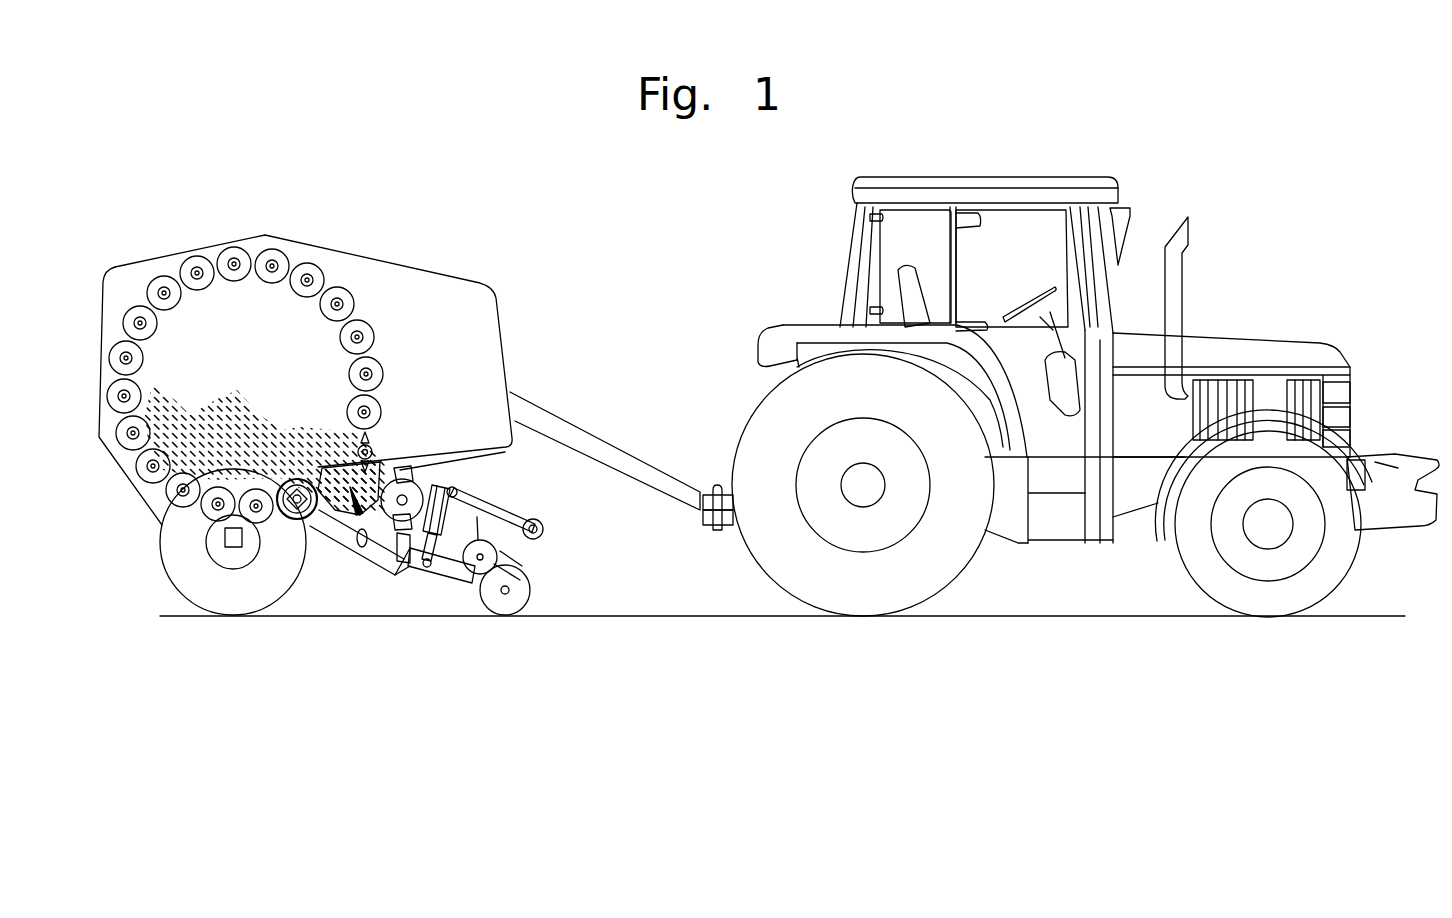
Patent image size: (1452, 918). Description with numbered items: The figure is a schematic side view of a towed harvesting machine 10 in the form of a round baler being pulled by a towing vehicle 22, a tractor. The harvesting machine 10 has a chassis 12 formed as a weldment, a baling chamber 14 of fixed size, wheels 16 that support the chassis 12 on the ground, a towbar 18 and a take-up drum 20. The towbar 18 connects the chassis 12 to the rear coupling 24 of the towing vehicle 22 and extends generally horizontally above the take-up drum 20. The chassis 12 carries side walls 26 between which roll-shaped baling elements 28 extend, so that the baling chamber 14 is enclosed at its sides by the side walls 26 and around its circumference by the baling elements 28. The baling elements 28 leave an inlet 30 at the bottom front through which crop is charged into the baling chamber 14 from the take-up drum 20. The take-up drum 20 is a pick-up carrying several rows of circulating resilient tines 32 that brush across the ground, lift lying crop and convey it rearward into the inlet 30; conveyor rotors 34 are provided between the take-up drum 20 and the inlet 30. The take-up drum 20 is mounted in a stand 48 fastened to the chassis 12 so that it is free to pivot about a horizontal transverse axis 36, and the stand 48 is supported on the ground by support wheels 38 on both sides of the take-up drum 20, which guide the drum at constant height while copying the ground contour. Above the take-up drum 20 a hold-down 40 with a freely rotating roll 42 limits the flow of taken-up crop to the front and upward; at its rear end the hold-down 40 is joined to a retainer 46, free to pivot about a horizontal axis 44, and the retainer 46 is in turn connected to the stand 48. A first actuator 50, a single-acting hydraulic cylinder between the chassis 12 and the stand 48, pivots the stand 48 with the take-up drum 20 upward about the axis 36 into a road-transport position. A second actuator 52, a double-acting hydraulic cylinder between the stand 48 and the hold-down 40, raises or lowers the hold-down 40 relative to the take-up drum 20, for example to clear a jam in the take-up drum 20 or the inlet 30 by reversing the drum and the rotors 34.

The harvesting machine 10 is at (193, 565).
The chassis 12 is at (312, 535).
The baling chamber 14 is at (243, 369).
The wheels 16 is at (259, 612).
The towbar 18 is at (637, 483).
The take-up drum 20 is at (478, 588).
The towing vehicle 22 is at (1103, 638).
The rear coupling 24 is at (717, 532).
The side walls 26 is at (458, 310).
The baling elements 28 is at (267, 237).
The inlet 30 is at (315, 522).
The tines 32 is at (513, 555).
The conveyor rotors 34 is at (380, 448).
The axis 36 is at (427, 566).
The support wheels 38 is at (527, 613).
The hold-down 40 is at (536, 521).
The roll 42 is at (538, 522).
The horizontal axis 44 is at (480, 460).
The retainer 46 is at (422, 486).
The stand 48 is at (474, 574).
The first actuator 50 is at (368, 548).
The second actuator 52 is at (463, 510).